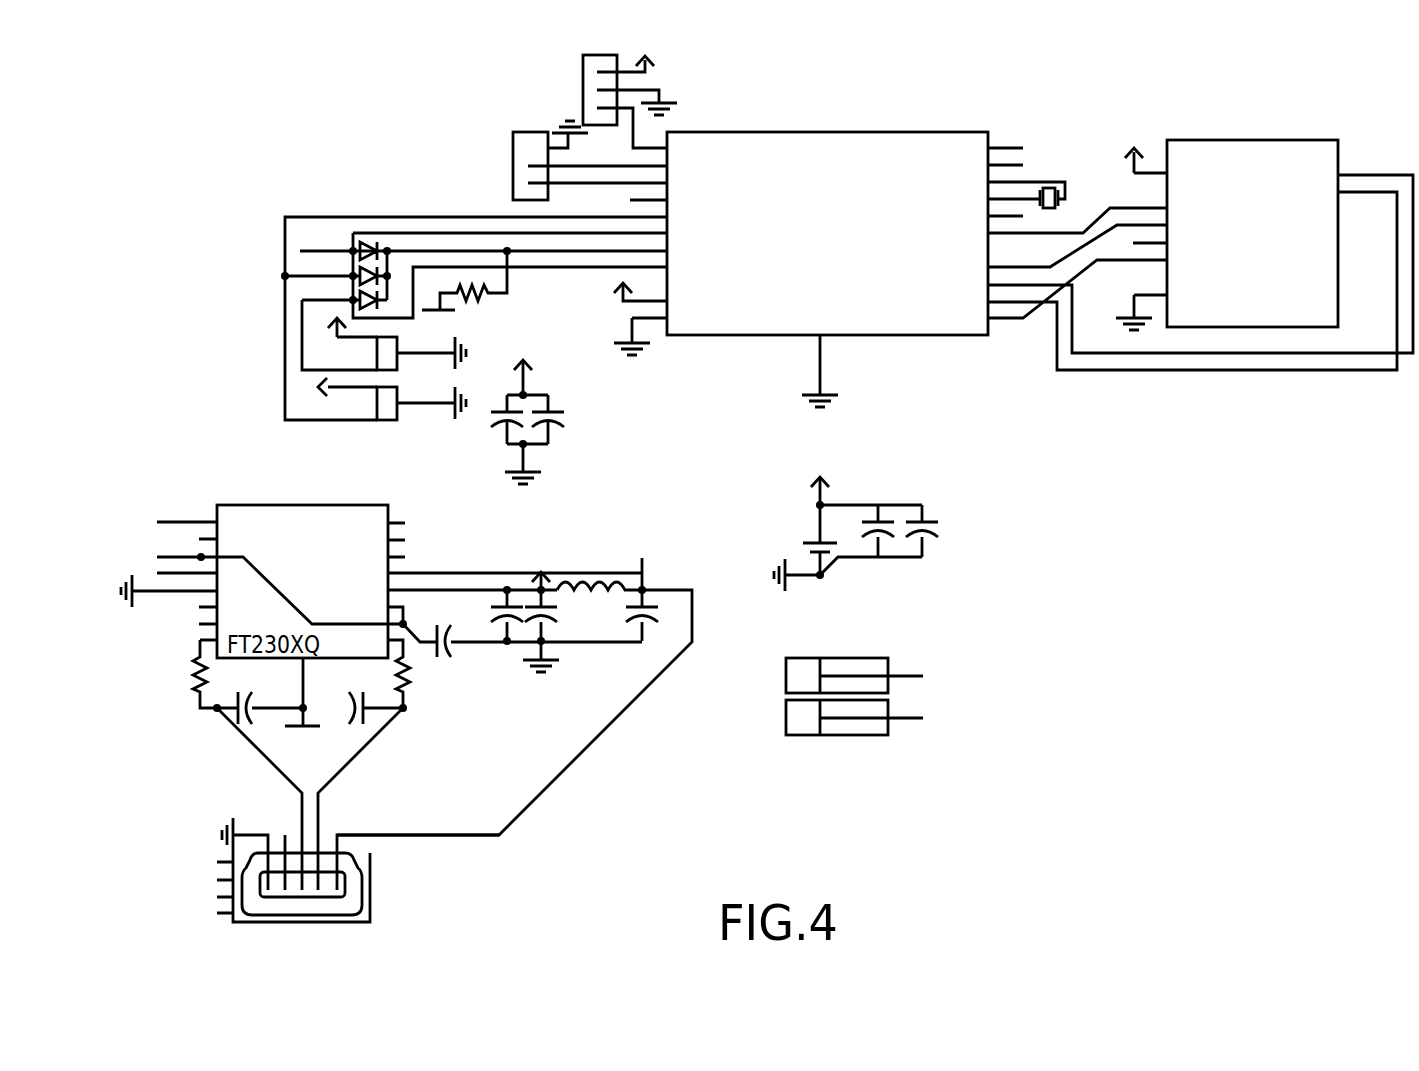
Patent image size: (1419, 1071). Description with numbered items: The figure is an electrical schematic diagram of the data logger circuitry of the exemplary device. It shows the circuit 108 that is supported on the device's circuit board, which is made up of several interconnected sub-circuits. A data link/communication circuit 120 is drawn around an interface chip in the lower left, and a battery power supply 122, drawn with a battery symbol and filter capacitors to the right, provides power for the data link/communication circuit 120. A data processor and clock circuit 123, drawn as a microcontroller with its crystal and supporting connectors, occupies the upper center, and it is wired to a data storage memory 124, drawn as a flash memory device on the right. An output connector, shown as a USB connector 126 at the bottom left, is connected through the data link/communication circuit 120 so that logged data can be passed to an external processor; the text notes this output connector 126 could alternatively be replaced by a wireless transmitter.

The circuit 108 is at (1022, 128).
The data link/communication circuit 120 is at (558, 542).
The battery power supply 122 is at (870, 578).
The data processor and clock circuit 123 is at (881, 132).
The data storage memory 124 is at (1270, 140).
The USB-3 connector 126 is at (370, 882).